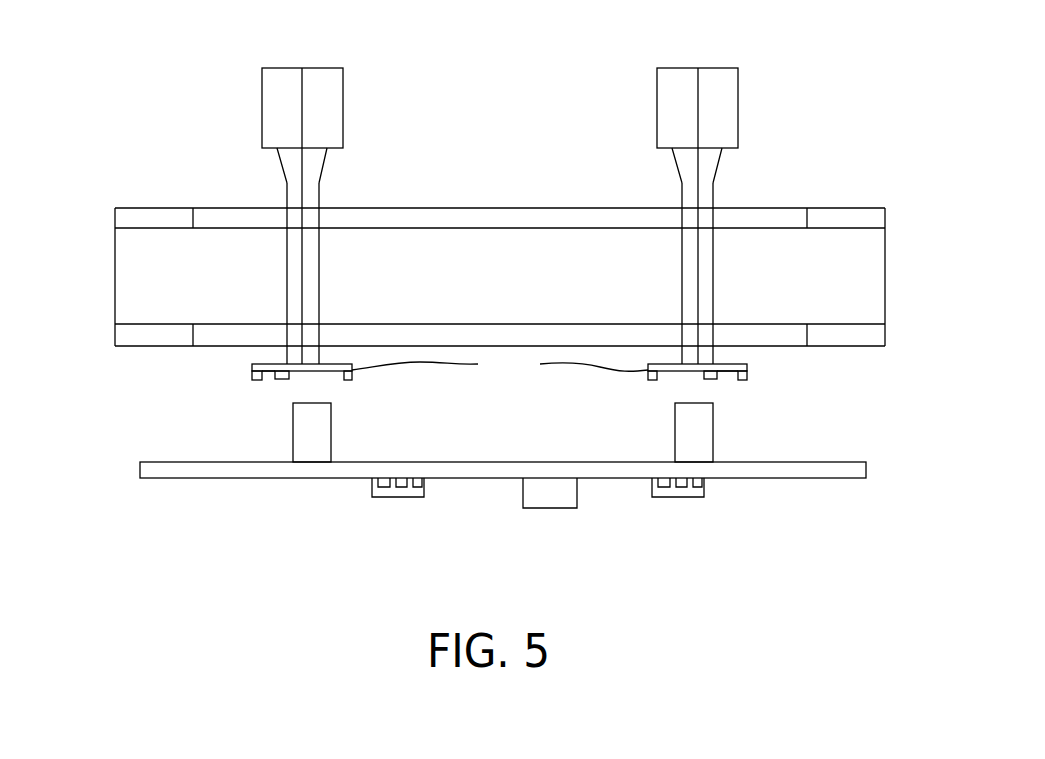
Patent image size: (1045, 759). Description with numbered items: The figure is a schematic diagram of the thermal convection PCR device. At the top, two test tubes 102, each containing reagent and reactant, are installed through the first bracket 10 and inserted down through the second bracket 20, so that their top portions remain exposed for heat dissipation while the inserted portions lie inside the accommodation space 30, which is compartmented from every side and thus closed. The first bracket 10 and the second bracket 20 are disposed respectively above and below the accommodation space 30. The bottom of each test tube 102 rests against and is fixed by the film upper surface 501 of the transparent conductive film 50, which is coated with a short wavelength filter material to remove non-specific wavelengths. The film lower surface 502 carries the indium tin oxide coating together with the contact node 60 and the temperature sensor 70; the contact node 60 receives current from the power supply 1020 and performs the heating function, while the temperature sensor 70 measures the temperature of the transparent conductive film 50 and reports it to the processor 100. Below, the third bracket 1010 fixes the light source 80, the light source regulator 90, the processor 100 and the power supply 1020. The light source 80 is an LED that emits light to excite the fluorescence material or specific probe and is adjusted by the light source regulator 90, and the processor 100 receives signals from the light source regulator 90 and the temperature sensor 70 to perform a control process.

The first bracket 10 is at (855, 217).
The second bracket 20 is at (855, 339).
The accommodation space 30 is at (143, 273).
The transparent conductive film 50 is at (500, 368).
The contact node 60 is at (257, 377).
The temperature sensor 70 is at (283, 380).
The light source 80 is at (308, 438).
The light source regulator 90 is at (398, 497).
The processor 100 is at (686, 497).
The test tube 102 is at (288, 106).
The film upper surface 501 is at (252, 366).
The film lower surface 502 is at (270, 372).
The third bracket 1010 is at (476, 478).
The power supply 1020 is at (550, 508).